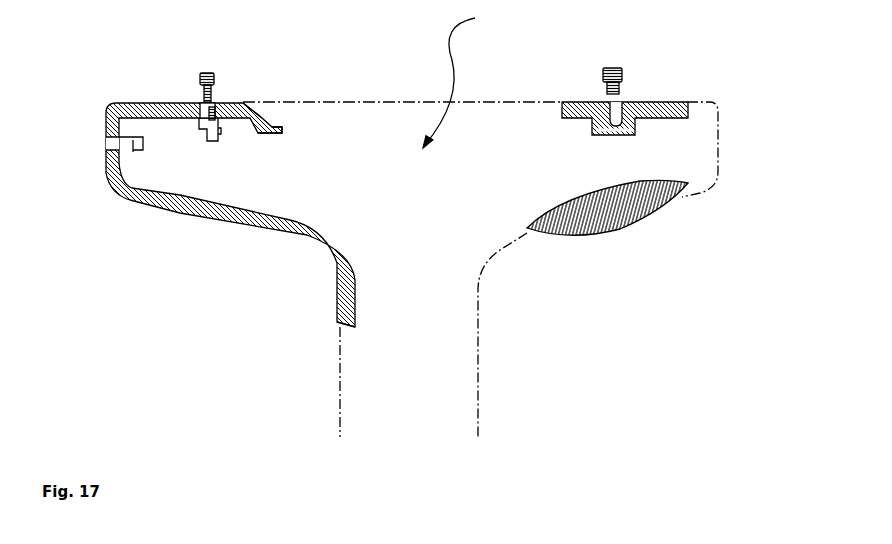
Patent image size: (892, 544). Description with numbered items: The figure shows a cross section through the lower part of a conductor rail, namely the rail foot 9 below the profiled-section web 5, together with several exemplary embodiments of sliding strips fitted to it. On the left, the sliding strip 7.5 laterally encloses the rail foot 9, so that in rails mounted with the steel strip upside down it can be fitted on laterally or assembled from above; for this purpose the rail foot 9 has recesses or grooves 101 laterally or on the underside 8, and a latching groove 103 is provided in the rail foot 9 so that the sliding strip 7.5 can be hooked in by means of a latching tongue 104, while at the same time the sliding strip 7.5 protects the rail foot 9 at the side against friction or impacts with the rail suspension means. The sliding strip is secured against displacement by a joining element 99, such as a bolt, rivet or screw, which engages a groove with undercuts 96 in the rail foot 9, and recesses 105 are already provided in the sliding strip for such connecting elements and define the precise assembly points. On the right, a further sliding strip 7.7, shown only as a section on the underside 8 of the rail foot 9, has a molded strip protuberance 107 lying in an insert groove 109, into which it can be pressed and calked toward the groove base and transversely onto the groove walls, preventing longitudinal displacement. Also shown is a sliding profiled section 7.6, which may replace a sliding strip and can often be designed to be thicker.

The profiled-section web 5 is at (412, 360).
The sliding strip 7.5 is at (237, 220).
The sliding profiled section 7.6 is at (578, 232).
The sliding strip 7.7 is at (668, 103).
The underside 8 is at (387, 101).
The rail foot 9 is at (460, 79).
The undercut 96 is at (209, 140).
The joining element 99 is at (208, 77).
The recess or groove 101 is at (198, 130).
The latching groove 103 is at (283, 128).
The latching tongue 104 is at (262, 119).
The recess 105 is at (200, 112).
The molded strip protuberance 107 is at (623, 112).
The insert groove 109 is at (593, 122).